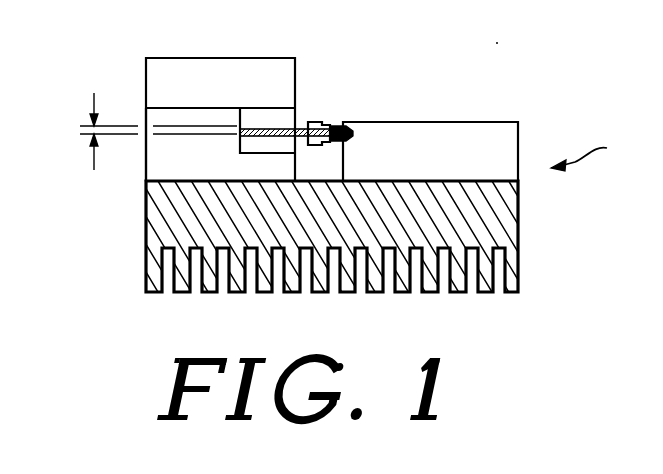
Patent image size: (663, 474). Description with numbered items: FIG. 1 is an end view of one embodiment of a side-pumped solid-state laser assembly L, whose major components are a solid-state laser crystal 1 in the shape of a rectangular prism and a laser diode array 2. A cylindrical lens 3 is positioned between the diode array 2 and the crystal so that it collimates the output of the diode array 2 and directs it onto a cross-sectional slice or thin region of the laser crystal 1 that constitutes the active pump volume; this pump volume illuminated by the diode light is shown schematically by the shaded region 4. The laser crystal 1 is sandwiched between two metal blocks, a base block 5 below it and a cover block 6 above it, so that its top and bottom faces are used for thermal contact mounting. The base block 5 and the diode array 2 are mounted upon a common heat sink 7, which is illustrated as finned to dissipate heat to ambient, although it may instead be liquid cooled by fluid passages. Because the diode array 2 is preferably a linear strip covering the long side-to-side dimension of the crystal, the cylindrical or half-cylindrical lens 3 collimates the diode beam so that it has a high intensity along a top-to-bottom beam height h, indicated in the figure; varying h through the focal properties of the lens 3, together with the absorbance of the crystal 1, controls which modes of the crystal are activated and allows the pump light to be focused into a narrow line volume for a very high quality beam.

The solid-state laser crystal 1 is at (267, 117).
The laser diode array 2 is at (438, 130).
The cylindrical lens 3 is at (318, 121).
The shaded region 4 is at (262, 138).
The base block 5 is at (167, 117).
The cover block 6 is at (165, 63).
The heat sink 7 is at (147, 222).
The beam height h is at (80, 127).
The side-pumped solid-state laser assembly L is at (587, 155).